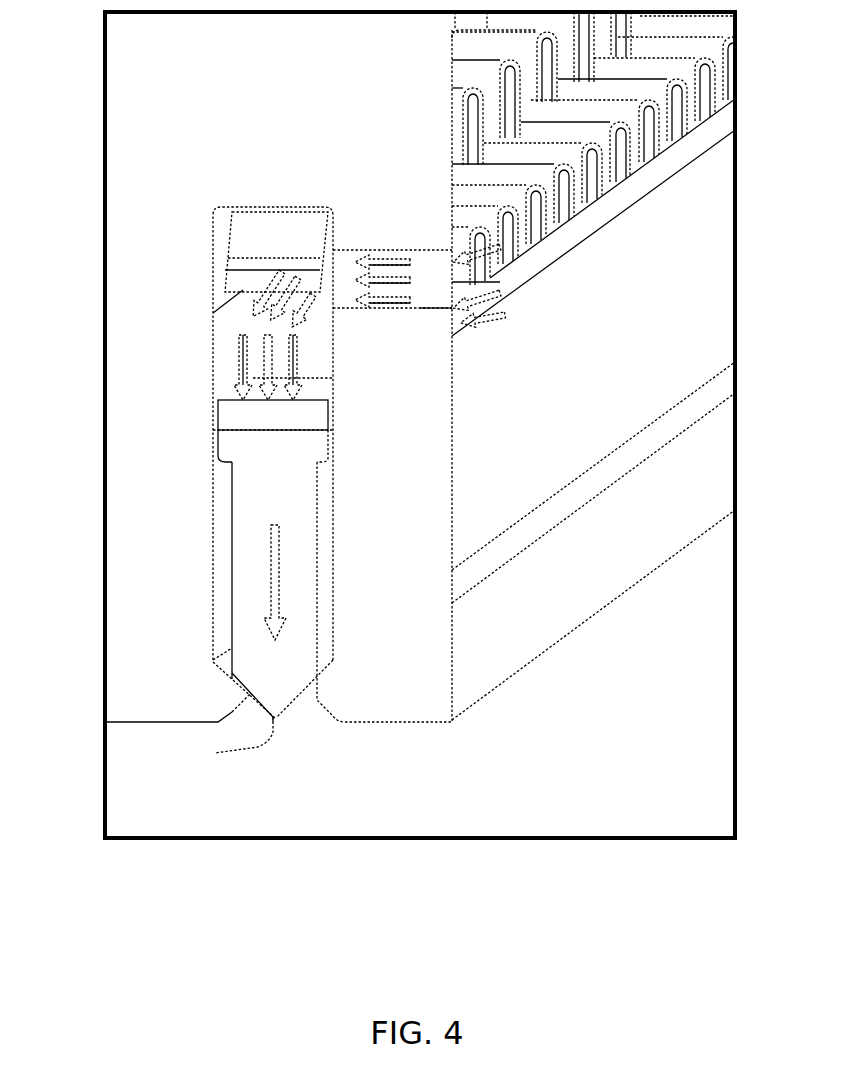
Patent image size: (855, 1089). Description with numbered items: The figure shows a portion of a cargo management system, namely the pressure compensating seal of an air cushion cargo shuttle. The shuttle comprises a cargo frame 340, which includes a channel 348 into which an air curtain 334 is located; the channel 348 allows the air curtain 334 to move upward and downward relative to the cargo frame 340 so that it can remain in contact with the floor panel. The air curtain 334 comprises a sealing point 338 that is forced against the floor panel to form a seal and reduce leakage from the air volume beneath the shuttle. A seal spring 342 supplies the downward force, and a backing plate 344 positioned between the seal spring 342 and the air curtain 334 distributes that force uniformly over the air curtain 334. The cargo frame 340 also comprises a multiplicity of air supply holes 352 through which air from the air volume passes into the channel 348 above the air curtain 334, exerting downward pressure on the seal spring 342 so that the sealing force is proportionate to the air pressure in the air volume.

The seal spring 342 is at (252, 258).
The channel 348 is at (230, 330).
The backing plate 344 is at (228, 418).
The air curtain 334 is at (243, 600).
The sealing point 338 is at (215, 753).
The air supply holes 352 is at (456, 262).
The cargo frame 340 is at (655, 348).